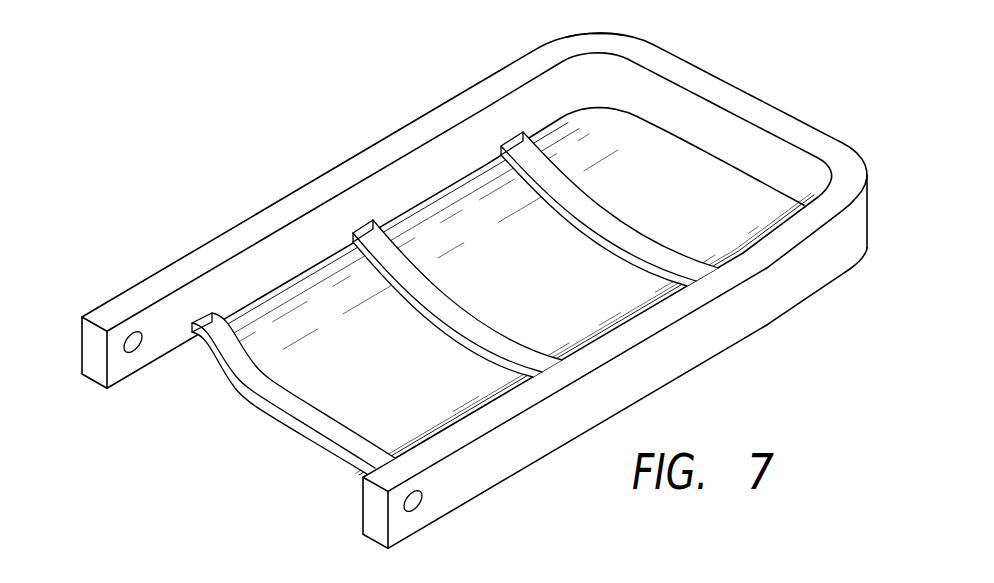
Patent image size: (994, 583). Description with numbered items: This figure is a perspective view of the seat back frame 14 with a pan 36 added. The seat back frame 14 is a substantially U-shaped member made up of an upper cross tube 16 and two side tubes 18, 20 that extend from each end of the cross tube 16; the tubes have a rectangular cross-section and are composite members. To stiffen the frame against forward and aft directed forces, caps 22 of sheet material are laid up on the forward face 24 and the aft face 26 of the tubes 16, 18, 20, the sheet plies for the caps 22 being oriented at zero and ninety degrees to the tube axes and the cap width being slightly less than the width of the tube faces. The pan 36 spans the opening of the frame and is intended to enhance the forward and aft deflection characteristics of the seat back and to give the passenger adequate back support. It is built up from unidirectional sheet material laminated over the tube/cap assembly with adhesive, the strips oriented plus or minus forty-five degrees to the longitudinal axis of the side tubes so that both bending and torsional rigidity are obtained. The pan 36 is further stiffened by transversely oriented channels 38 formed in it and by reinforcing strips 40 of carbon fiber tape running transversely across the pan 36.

The seat back frame 14 is at (474, 282).
The upper cross tube 16 is at (474, 274).
The side tube 18 is at (540, 459).
The side tube 20 is at (402, 128).
The cap 22 is at (270, 205).
The forward face 24 is at (823, 150).
The aft face 26 is at (535, 18).
The pan 36 is at (360, 402).
The transversely oriented channel 38 is at (553, 190).
The reinforcing strip 40 is at (622, 235).